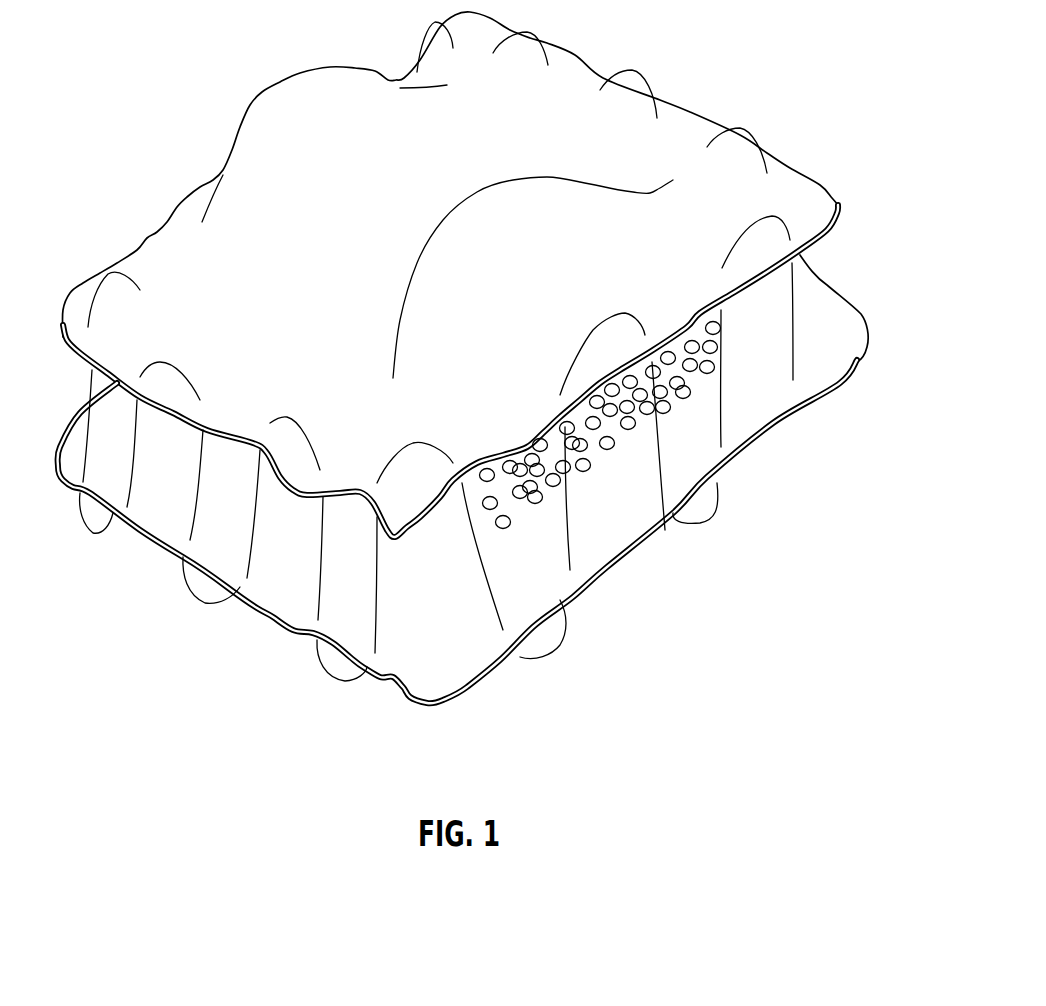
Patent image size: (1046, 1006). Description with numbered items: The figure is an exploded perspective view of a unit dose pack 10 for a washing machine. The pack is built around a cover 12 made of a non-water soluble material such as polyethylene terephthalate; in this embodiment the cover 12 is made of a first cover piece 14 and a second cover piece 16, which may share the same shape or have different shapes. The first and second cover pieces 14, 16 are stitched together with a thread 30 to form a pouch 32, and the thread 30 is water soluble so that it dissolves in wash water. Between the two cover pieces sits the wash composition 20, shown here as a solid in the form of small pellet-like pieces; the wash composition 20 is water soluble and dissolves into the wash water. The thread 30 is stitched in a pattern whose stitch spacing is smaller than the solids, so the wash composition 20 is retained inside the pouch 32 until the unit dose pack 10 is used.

The unit dose pack 10 is at (723, 46).
The cover 12 is at (303, 90).
The first cover piece 14 is at (840, 211).
The second cover piece 16 is at (869, 334).
The wash composition 20 is at (585, 476).
The thread 30 is at (497, 617).
The pouch 32 is at (288, 586).